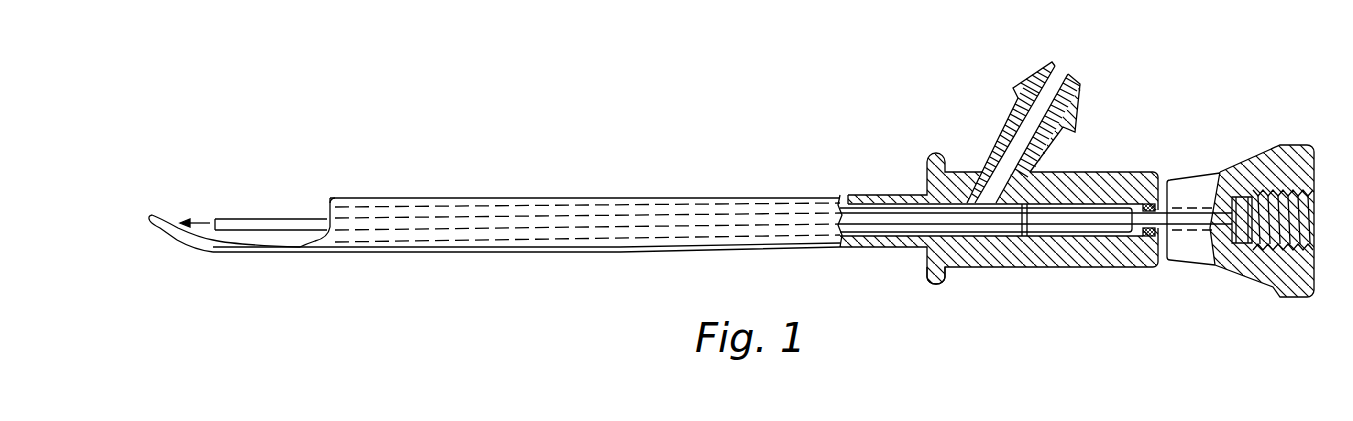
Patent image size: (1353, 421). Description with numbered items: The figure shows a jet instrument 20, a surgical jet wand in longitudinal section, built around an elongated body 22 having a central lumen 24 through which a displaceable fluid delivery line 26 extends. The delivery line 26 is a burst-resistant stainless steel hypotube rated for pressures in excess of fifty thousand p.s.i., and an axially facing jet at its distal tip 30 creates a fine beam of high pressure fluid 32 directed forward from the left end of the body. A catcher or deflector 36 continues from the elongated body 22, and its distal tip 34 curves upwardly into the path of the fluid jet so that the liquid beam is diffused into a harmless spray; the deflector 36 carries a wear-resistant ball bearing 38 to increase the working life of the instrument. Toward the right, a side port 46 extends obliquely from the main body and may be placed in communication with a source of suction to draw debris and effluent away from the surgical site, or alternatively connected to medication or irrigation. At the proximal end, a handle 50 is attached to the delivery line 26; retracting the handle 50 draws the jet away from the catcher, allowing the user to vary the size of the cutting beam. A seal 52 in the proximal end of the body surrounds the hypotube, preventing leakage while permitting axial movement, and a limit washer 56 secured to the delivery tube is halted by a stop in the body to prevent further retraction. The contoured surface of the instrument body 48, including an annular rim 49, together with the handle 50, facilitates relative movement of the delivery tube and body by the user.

The jet instrument 20 is at (647, 185).
The elongated body 22 is at (764, 195).
The central lumen 24 is at (862, 233).
The fluid delivery line 26 is at (898, 228).
The distal tip of the delivery line 30 is at (212, 220).
The high pressure fluid 32 is at (201, 218).
The distal tip of the deflector 34 is at (155, 232).
The catcher or deflector 36 is at (190, 252).
The ball bearing 38 is at (170, 225).
The side port 46 is at (1081, 86).
The instrument body 48 is at (1093, 268).
The annular rim 49 is at (937, 286).
The handle 50 is at (1238, 165).
The seal 52 is at (1150, 238).
The limit washer 56 is at (1025, 238).